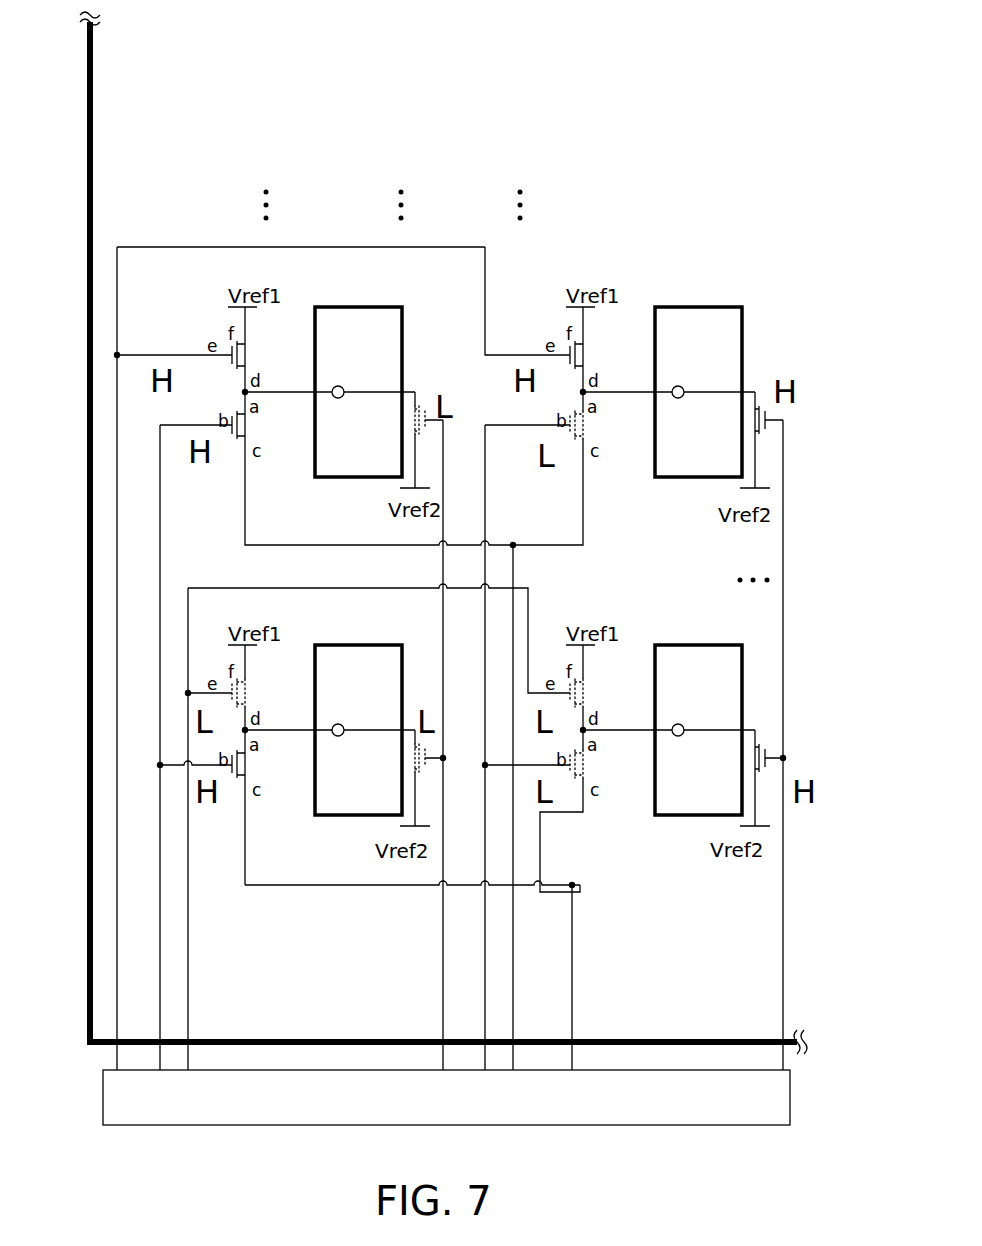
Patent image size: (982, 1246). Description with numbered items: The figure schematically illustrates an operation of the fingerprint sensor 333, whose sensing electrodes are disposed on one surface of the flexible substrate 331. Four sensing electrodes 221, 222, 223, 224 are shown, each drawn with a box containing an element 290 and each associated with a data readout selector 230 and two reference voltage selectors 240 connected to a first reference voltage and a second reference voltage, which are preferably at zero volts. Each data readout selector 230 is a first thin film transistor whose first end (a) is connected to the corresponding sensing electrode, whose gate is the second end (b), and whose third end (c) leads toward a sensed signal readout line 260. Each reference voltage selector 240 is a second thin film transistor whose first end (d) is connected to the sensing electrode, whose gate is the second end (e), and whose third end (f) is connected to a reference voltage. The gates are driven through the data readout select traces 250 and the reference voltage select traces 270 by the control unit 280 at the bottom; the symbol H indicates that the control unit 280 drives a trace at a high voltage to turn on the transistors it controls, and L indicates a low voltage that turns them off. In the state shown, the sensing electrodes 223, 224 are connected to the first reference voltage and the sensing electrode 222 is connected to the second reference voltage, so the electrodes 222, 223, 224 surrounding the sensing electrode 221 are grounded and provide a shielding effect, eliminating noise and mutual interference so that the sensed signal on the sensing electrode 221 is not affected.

The fingerprint sensor 333 is at (440, 119).
The reference voltage select trace 270 is at (117, 265).
The data readout select trace 250 is at (160, 493).
The sensed signal readout line 260 is at (588, 533).
The data readout selector 230 is at (247, 428).
The reference voltage selector 240 is at (255, 348).
The light emitting element 290 is at (340, 386).
The sensing electrode 221 is at (357, 816).
The sensing electrode 222 is at (697, 816).
The sensing electrode 223 is at (357, 478).
The sensing electrode 224 is at (697, 478).
The control unit 280 is at (455, 1125).
The flexible substrate 331 is at (90, 1047).